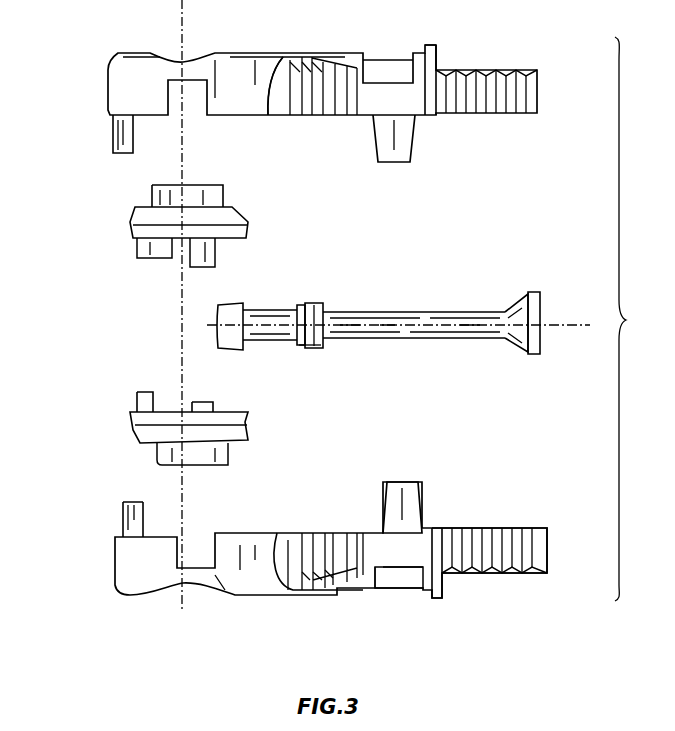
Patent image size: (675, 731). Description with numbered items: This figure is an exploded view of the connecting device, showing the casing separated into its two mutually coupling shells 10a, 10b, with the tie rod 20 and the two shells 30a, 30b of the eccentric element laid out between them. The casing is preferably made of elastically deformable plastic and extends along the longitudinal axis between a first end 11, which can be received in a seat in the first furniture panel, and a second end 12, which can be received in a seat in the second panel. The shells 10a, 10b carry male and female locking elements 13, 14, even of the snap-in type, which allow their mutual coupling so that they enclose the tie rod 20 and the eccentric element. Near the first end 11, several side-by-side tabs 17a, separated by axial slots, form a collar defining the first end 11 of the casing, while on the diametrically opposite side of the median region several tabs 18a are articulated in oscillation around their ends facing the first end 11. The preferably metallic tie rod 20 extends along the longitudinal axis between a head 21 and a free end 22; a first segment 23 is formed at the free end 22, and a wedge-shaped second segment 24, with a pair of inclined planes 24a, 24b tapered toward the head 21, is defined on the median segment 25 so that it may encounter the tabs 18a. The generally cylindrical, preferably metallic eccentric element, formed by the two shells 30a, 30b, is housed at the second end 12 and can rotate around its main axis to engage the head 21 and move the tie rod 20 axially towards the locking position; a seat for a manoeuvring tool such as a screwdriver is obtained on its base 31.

The shell 10a is at (246, 53).
The shell 10b is at (245, 600).
The first end 11 is at (537, 90).
The second end 12 is at (108, 78).
The male locking element 13 is at (418, 130).
The female locking element 14 is at (390, 590).
The tabs 17a is at (468, 70).
The tabs 18a is at (322, 57).
The tie rod 20 is at (387, 340).
The head 21 is at (240, 302).
The free end 22 is at (538, 312).
The first segment 23 is at (514, 300).
The second segment 24 is at (307, 340).
The inclined plane 24a is at (303, 347).
The inclined plane 24b is at (301, 308).
The median segment 25 is at (402, 340).
The shell 30a is at (128, 238).
The shell 30b is at (125, 421).
The base 31 is at (160, 467).